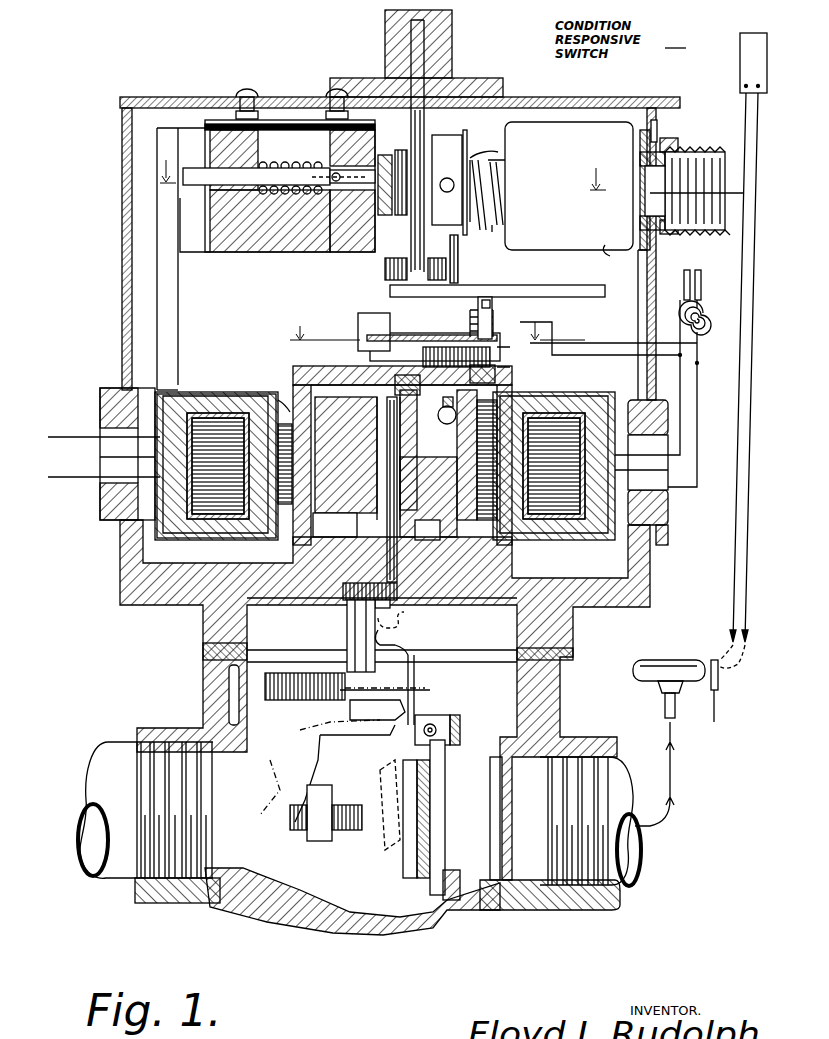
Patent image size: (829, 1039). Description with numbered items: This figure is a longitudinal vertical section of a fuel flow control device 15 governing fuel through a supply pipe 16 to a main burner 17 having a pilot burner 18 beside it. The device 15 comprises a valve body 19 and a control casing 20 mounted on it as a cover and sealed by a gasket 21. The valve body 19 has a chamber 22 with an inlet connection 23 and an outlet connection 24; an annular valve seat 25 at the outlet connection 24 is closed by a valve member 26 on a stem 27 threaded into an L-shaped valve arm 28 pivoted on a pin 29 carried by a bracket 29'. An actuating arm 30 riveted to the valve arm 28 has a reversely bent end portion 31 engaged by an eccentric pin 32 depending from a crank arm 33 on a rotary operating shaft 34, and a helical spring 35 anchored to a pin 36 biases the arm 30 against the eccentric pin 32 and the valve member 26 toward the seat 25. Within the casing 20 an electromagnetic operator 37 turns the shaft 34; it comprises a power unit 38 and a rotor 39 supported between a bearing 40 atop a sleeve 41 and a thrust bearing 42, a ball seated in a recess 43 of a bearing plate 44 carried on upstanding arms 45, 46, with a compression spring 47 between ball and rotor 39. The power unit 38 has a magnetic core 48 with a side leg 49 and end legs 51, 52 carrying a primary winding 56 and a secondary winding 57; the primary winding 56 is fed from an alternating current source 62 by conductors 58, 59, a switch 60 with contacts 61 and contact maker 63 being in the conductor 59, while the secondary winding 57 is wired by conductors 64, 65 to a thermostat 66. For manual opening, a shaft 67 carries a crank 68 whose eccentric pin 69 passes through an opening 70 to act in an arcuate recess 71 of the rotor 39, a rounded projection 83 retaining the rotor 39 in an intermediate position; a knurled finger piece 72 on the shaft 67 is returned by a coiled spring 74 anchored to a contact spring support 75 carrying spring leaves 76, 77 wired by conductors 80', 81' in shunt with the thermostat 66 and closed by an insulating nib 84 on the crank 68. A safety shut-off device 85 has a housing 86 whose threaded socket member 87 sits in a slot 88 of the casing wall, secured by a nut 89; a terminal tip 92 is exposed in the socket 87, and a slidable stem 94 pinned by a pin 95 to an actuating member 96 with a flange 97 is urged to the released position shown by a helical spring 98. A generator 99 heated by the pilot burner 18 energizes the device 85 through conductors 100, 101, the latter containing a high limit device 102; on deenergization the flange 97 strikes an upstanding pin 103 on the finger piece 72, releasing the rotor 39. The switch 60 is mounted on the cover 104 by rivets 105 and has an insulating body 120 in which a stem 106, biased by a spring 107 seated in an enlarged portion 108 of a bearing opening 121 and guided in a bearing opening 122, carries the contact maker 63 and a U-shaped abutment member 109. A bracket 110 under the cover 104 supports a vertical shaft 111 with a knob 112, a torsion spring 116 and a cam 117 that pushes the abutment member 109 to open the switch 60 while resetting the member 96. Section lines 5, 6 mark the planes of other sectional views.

The control device 15 is at (113, 585).
The supply pipe 16 is at (112, 880).
The main fuel burner 17 is at (640, 675).
The pilot or ignition burner 18 is at (718, 682).
The valve body 19 is at (295, 918).
The control casing 20 is at (122, 312).
The gasket 21 is at (205, 650).
The chamber 22 is at (435, 700).
The inlet connection 23 is at (218, 905).
The outlet connection 24 is at (575, 910).
The annular valve seat 25 is at (440, 884).
The valve member 26 is at (410, 872).
The stem 27 is at (295, 825).
The L-shaped valve arm 28 is at (320, 734).
The pin 29 is at (450, 730).
The bracket 29' is at (465, 723).
The actuating arm 30 is at (420, 690).
The reversely bent end portion 31 is at (402, 628).
The eccentric pin 32 is at (358, 632).
The crank arm 33 is at (343, 592).
The rotary operating shaft 34 is at (392, 595).
The helical spring 35 is at (290, 672).
The pin 36 is at (230, 677).
The electromagnetic operator 37 is at (284, 368).
The power unit 38 is at (618, 402).
The rotor 39 is at (430, 490).
The bearing 40 is at (400, 425).
The sleeve 41 is at (335, 525).
The thrust bearing 42 is at (446, 447).
The recess 43 is at (358, 374).
The bearing plate 44 is at (292, 376).
The upstanding arm 45 is at (305, 520).
The upstanding arm 46 is at (472, 530).
The coiled compression spring 47 is at (318, 357).
The magnetic core 48 is at (200, 520).
The side leg 49 is at (285, 420).
The end leg 51 is at (218, 510).
The end leg 52 is at (552, 510).
The primary winding 56 is at (222, 400).
The secondary winding 57 is at (578, 408).
The conductor 58 is at (100, 480).
The conductor 59 is at (178, 322).
The switch 60 is at (280, 255).
The contacts 61 is at (343, 178).
The source of alternating current 62 is at (48, 450).
The contact maker 63 is at (326, 162).
The conductor 64 is at (641, 462).
The conductor 65 is at (670, 488).
The thermostat 66 is at (702, 312).
The shaft 67 is at (492, 304).
The crank 68 is at (490, 358).
The eccentric pin 69 is at (438, 412).
The opening 70 is at (425, 372).
The arcuate recess 71 is at (478, 420).
The finger piece 72 is at (558, 297).
The coiled spring 74 is at (478, 305).
The contact spring support 75 is at (395, 336).
The spring leaf 76 is at (360, 318).
The spring leaf 77 is at (470, 315).
The conductor 80' is at (600, 338).
The conductor 81' is at (613, 337).
The rounded projection 83 is at (450, 410).
The insulating nib 84 is at (456, 357).
The electromagnetic safety shut-off device 85 is at (572, 200).
The housing 86 is at (608, 250).
The socket member 87 is at (708, 228).
The slot 88 is at (658, 132).
The nut 89 is at (678, 144).
The terminal tip 92 is at (648, 190).
The slidable stem 94 is at (494, 224).
The pin 95 is at (447, 192).
The actuating member 96 is at (445, 140).
The flange 97 is at (495, 146).
The helical spring 98 is at (503, 161).
The generator 99 is at (730, 645).
The conductor 100 is at (725, 398).
The conductor 101 is at (745, 108).
The condition responsive circuit controlling device 102 is at (748, 61).
The upstanding pin 103 is at (460, 268).
The cover 104 is at (195, 100).
The rivets 105 is at (332, 98).
The stem 106 is at (212, 183).
The spring 107 is at (266, 162).
The enlarged diameter portion 108 is at (212, 238).
The U-shaped abutment member 109 is at (385, 218).
The U-shaped apertured bracket 110 is at (480, 130).
The rotatable vertical shaft 111 is at (430, 42).
The knob 112 is at (385, 30).
The torsion spring 116 is at (388, 268).
The cam 117 is at (424, 172).
The body 120 is at (240, 250).
The bearing opening 121 is at (212, 166).
The bearing opening 122 is at (335, 252).
The section line 5 is at (437, 334).
The section line 6 is at (383, 168).